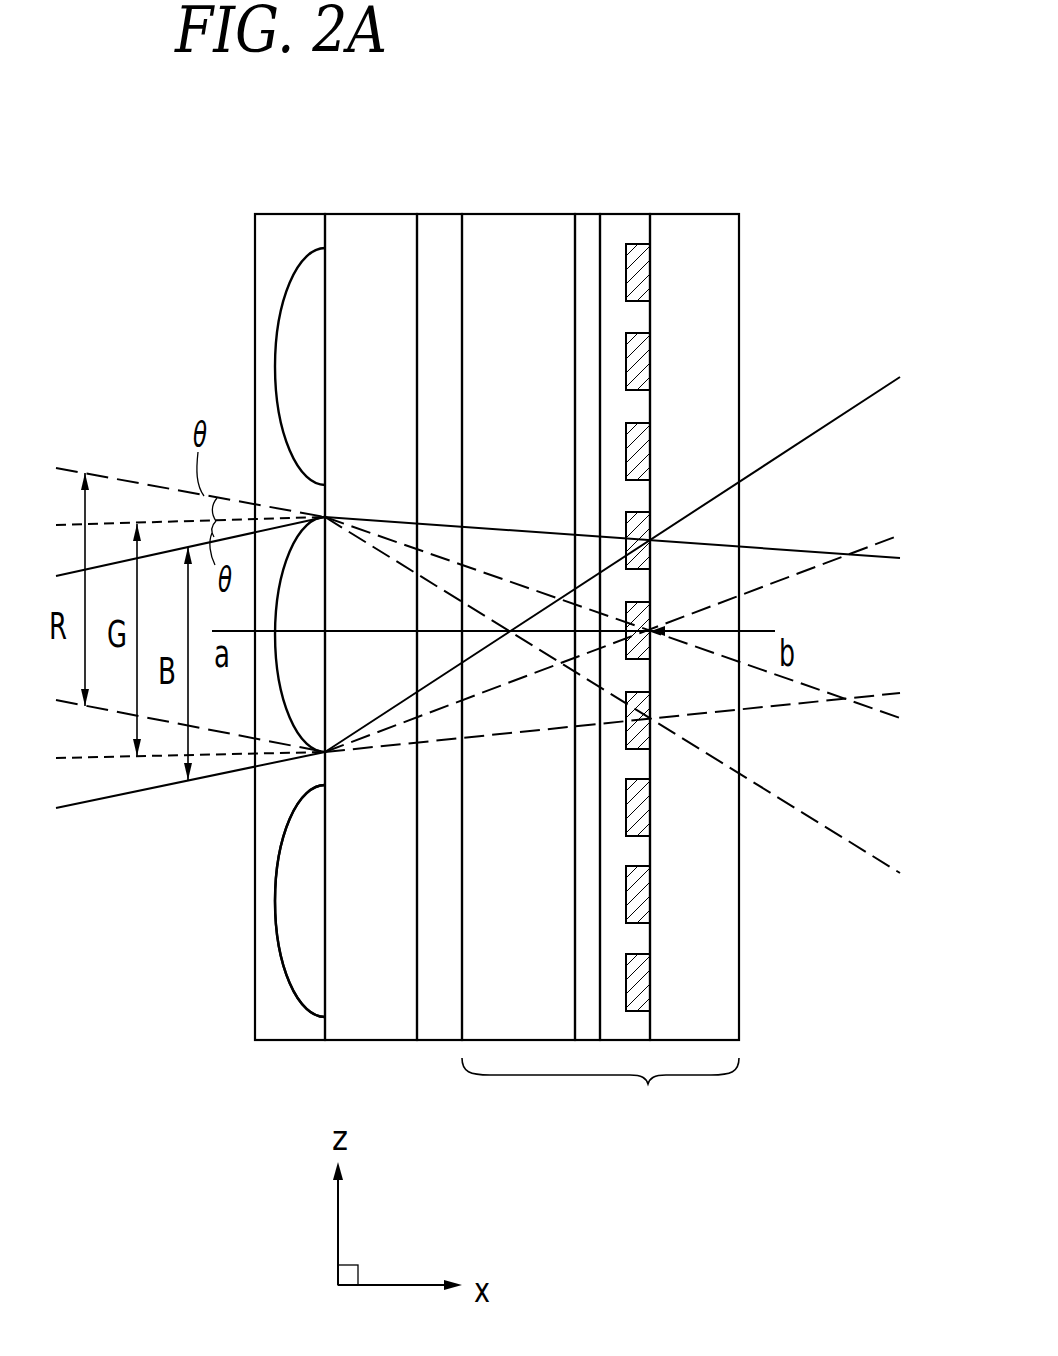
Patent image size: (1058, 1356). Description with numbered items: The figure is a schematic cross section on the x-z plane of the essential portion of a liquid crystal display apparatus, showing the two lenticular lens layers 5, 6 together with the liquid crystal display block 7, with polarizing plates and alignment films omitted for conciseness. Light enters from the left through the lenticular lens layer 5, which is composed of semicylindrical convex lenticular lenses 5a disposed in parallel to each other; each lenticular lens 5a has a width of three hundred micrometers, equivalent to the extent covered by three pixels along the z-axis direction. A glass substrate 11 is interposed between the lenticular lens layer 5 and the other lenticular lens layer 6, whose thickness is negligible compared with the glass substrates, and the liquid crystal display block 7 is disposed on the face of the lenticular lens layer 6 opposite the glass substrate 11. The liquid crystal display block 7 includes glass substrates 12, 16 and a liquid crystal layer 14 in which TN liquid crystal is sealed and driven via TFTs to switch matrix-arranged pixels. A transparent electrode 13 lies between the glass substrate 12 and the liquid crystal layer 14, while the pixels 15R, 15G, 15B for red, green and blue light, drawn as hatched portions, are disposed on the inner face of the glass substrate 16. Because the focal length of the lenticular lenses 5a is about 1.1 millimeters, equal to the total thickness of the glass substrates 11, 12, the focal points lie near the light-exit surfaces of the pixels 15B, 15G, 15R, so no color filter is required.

The lenticular lens layer 5 is at (272, 212).
The lenticular lens 5a is at (292, 994).
The glass substrate 11 is at (372, 212).
The lenticular lens layer 6 is at (440, 212).
The glass substrate 12 is at (515, 212).
The transparent electrode 13 is at (583, 212).
The liquid crystal layer 14 is at (625, 212).
The pixel 15B is at (653, 518).
The pixel 15G is at (653, 618).
The pixel 15R is at (651, 740).
The glass substrate 16 is at (733, 214).
The liquid crystal display block 7 is at (600, 1090).